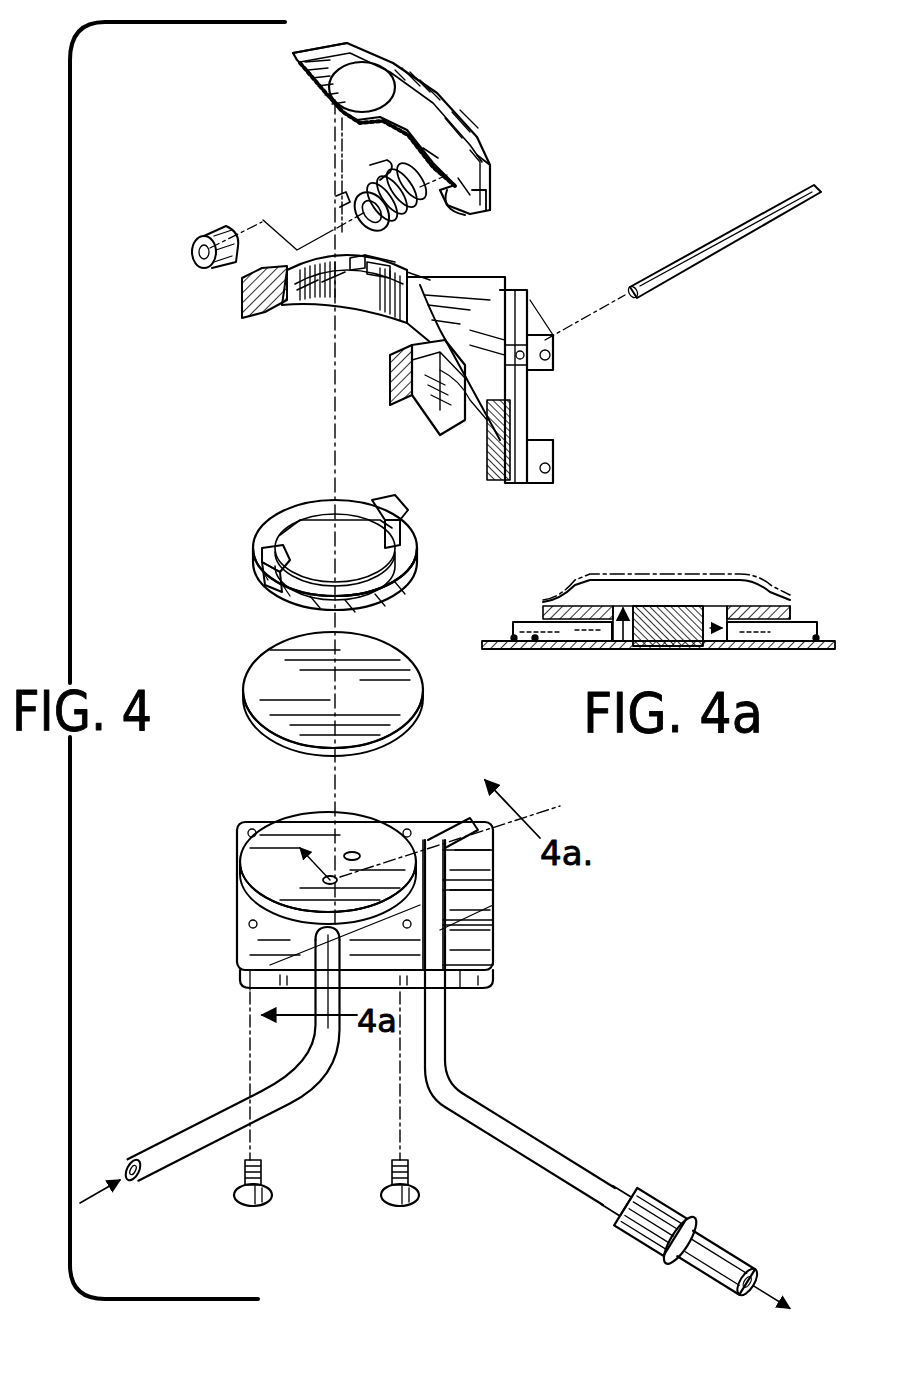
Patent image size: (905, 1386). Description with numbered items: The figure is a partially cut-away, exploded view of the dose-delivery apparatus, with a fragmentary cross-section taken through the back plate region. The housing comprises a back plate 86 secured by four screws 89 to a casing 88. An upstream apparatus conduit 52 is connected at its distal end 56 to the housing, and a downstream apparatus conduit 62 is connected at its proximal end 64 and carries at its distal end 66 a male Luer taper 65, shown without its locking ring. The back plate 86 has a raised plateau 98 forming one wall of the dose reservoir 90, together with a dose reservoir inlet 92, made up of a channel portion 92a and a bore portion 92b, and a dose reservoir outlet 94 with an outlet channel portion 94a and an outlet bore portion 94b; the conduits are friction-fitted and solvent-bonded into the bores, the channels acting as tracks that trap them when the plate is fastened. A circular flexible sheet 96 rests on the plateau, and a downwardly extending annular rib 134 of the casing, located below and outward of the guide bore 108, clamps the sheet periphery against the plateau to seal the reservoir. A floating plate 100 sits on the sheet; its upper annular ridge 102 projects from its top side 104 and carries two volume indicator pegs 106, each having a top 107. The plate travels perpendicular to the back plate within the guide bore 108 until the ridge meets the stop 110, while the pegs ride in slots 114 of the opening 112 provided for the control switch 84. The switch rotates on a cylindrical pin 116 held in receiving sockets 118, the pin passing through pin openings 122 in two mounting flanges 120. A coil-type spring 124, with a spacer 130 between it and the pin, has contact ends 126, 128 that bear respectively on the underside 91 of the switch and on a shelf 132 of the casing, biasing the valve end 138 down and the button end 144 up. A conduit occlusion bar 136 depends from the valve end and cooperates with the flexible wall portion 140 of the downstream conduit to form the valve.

In FIG. 4, the upstream apparatus conduit 52 is at (195, 1135).
In FIG. 4, the distal end 56 is at (245, 980).
In FIG. 4a, the distal end 56 is at (522, 622).
In FIG. 4, the downstream apparatus conduit 62 is at (436, 1060).
In FIG. 4, the proximal end 64 is at (455, 865).
In FIG. 4a, the proximal end 64 is at (806, 618).
In FIG. 4, the male Luer taper 65 is at (735, 1262).
In FIG. 4, the distal end 66 is at (617, 1185).
In FIG. 4, the control switch 84 is at (295, 48).
In FIG. 4, the back plate 86 is at (478, 988).
In FIG. 4, the casing 88 is at (492, 278).
In FIG. 4, the screws 89 is at (257, 1205).
In FIG. 4a, the dose reservoir 90 is at (730, 604).
In FIG. 4, the underside 91 is at (342, 120).
In FIG. 4, the dose reservoir inlet 92 is at (268, 950).
In FIG. 4, the channel portion 92a is at (312, 990).
In FIG. 4a, the channel portion 92a is at (500, 628).
In FIG. 4, the bore portion 92b is at (280, 898).
In FIG. 4a, the bore portion 92b is at (602, 648).
In FIG. 4, the dose reservoir outlet 94 is at (455, 890).
In FIG. 4, the outlet channel portion 94a is at (455, 920).
In FIG. 4a, the outlet channel portion 94a is at (830, 622).
In FIG. 4, the outlet bore portion 94b is at (356, 848).
In FIG. 4a, the outlet bore portion 94b is at (775, 648).
In FIG. 4, the circular flexible sheet 96 is at (268, 682).
In FIG. 4a, the circular flexible sheet 96 is at (662, 576).
In FIG. 4, the raised plateau 98 is at (297, 818).
In FIG. 4a, the raised plateau 98 is at (592, 604).
In FIG. 4, the floating plate 100 is at (258, 514).
In FIG. 4, the upper annular ridge 102 is at (410, 545).
In FIG. 4, the top side 104 is at (305, 500).
In FIG. 4, the volume indicator pegs 106 is at (405, 525).
In FIG. 4, the top 107 is at (396, 498).
In FIG. 4, the guide bore 108 is at (305, 300).
In FIG. 4, the stop 110 is at (332, 298).
In FIG. 4, the opening 112 is at (372, 257).
In FIG. 4, the slots 114 is at (424, 276).
In FIG. 4, the cylindrical pin 116 is at (805, 210).
In FIG. 4, the receiving sockets 118 is at (522, 360).
In FIG. 4, the mounting flanges 120 is at (423, 148).
In FIG. 4, the pin opening 122 is at (466, 214).
In FIG. 4, the coil-type spring 124 is at (380, 177).
In FIG. 4, the contact end 126 is at (342, 153).
In FIG. 4, the contact end 128 is at (338, 198).
In FIG. 4, the spacer 130 is at (212, 236).
In FIG. 4, the shelf 132 is at (445, 422).
In FIG. 4, the annular rib 134 is at (262, 318).
In FIG. 4, the conduit occlusion bar 136 is at (490, 202).
In FIG. 4, the valve end 138 is at (492, 160).
In FIG. 4, the flexible wall portion 140 is at (455, 940).
In FIG. 4, the button end 144 is at (320, 48).